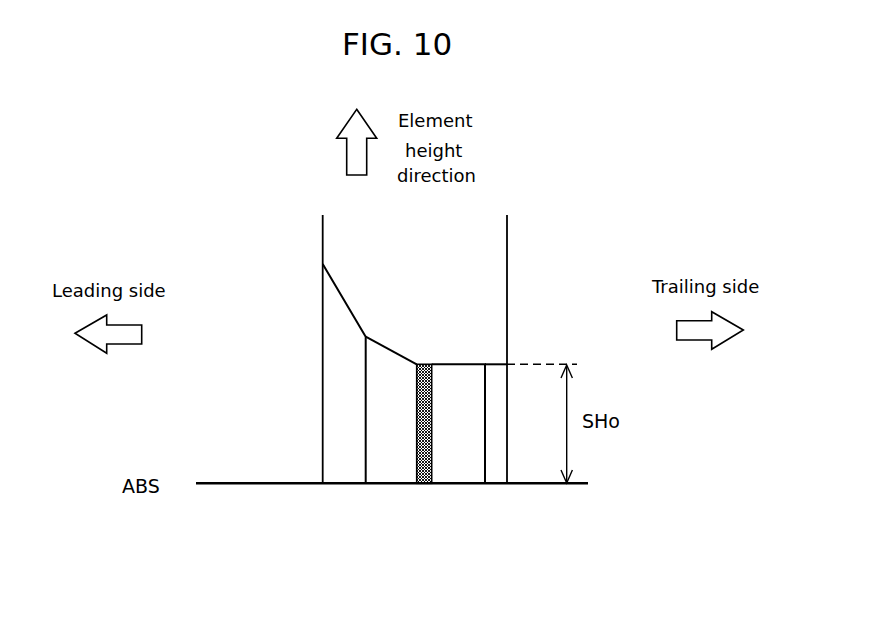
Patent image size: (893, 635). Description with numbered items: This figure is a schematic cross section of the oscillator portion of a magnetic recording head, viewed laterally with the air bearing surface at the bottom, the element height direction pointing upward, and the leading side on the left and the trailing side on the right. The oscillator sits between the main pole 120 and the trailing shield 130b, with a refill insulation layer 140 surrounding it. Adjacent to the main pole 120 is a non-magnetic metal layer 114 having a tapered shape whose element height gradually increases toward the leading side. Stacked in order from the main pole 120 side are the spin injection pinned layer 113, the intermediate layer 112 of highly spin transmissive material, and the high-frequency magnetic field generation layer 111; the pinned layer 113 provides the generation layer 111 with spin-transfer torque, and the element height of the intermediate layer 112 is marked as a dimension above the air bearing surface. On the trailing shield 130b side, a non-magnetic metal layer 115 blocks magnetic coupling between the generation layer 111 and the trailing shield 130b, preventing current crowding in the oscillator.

The main pole 120 is at (283, 349).
The refill insulation layer 140 is at (468, 289).
The trailing shield 130b is at (552, 354).
The non-magnetic metal layer 114 is at (333, 392).
The spin injection pinned layer 113 is at (392, 360).
The intermediate layer 112 is at (425, 364).
The high-frequency magnetic field generation layer 111 is at (452, 380).
The non-magnetic metal layer 115 is at (500, 372).